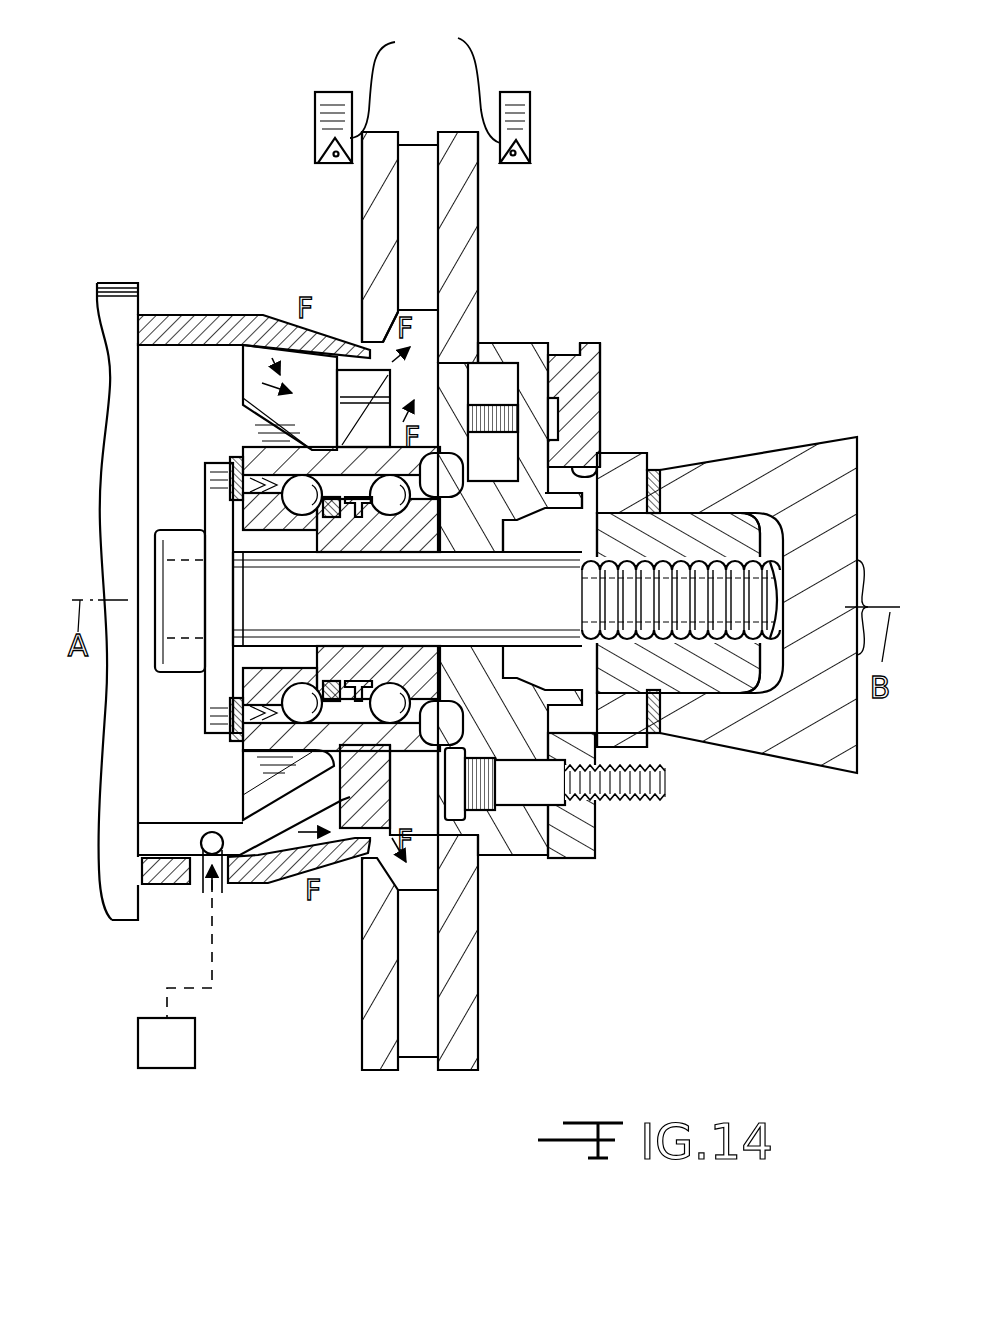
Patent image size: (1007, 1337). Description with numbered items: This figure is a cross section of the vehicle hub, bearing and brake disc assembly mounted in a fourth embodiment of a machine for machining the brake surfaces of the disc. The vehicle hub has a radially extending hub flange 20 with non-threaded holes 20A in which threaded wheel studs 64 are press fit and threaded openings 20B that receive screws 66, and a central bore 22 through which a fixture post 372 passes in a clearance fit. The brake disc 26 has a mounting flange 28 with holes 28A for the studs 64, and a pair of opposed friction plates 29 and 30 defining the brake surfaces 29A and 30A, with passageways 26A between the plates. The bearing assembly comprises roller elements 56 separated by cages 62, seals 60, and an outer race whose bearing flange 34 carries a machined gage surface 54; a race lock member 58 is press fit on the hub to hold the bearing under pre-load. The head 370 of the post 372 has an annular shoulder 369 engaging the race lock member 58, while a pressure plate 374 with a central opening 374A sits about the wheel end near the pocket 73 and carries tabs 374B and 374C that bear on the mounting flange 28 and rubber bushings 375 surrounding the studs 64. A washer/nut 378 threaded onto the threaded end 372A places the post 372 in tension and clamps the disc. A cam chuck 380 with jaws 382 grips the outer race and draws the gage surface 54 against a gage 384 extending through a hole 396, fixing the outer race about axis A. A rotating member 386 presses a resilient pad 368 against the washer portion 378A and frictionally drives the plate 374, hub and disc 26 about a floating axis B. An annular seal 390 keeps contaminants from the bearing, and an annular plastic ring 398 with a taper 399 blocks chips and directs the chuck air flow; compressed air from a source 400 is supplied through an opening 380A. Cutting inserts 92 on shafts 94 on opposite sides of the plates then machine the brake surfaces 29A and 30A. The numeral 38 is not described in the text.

The hub flange 20 is at (524, 601).
The non-threaded holes 20A is at (527, 807).
The threaded openings 20B is at (490, 365).
The bore 22 is at (360, 558).
The brake disc 26 is at (552, 350).
The passageways 26A is at (413, 145).
The mounting flange 28 is at (538, 842).
The holes 28A is at (560, 556).
The friction plate 29 is at (375, 255).
The brake surface 29A is at (362, 218).
The friction plate 30 is at (460, 230).
The brake surface 30A is at (478, 205).
The bearing flange 34 is at (393, 390).
The threaded bore 38 is at (468, 415).
The gage surface 54 is at (243, 798).
The roller elements 56 is at (410, 740).
The race lock member 58 is at (270, 680).
The seals 60 is at (298, 470).
The separators or cages 62 is at (340, 750).
The threaded wheel studs 64 is at (668, 782).
The screws 66 is at (580, 395).
The pocket 73 is at (480, 560).
The cutting inserts 92 is at (318, 147).
The shafts 94 is at (425, 84).
The resilient pad 368 is at (657, 470).
The annular shoulder 369 is at (258, 577).
The head 370 is at (210, 490).
The fixture post 372 is at (257, 590).
The threaded end 372A is at (700, 560).
The pressure plate 374 is at (600, 390).
The central opening 374A is at (578, 478).
The tabs 374B is at (602, 418).
The tabs 374C is at (600, 352).
The bushings 375 is at (598, 795).
The washer/nut 378 is at (713, 677).
The washer portion 378A is at (640, 740).
The cam chuck 380 is at (160, 372).
The opening 380A is at (227, 862).
The jaws 382 is at (245, 425).
The gage 384 is at (275, 825).
The rotating member 386 is at (813, 453).
The annular seal 390 is at (228, 720).
The hole 396 is at (167, 872).
The annular plastic ring 398 is at (150, 300).
The taper 399 is at (372, 340).
The source of compressed air 400 is at (195, 1045).